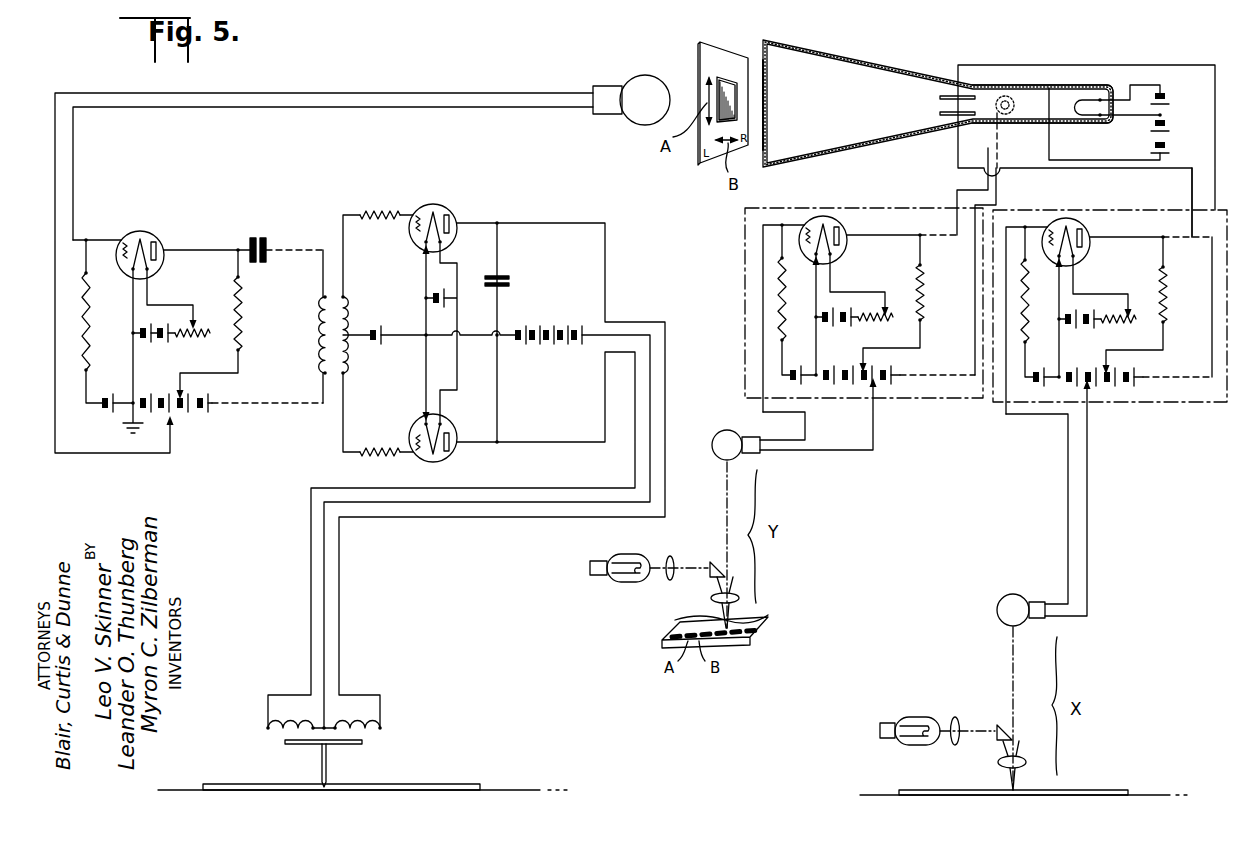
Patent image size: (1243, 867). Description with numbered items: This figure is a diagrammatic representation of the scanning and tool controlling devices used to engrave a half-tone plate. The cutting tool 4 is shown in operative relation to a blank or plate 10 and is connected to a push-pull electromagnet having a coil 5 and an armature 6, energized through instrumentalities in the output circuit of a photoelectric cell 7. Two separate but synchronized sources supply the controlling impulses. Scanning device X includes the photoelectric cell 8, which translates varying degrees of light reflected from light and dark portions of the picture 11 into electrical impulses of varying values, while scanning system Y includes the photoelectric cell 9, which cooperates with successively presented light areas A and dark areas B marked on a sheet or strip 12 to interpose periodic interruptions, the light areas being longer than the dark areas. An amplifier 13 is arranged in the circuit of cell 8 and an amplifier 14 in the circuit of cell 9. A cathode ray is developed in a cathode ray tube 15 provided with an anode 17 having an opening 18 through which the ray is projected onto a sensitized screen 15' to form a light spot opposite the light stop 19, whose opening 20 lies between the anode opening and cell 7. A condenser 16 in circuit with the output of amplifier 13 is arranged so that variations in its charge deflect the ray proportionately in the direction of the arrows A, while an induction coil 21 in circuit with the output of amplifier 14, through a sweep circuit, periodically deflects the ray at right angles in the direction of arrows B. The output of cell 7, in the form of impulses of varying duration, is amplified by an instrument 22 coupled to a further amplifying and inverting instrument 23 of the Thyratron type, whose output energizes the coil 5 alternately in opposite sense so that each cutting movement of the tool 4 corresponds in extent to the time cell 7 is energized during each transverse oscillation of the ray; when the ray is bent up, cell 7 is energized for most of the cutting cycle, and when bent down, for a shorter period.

The cutting tool 4 is at (320, 770).
The coil 5 is at (290, 724).
The armature 6 is at (345, 745).
The photoelectric cell 7 is at (638, 88).
The photoelectric cell 8 is at (1005, 606).
The photoelectric cell 9 is at (718, 437).
The plate 10 is at (420, 787).
The picture 11 is at (1091, 792).
The strip 12 is at (762, 620).
The amplifier 13 is at (1174, 403).
The amplifier 14 is at (930, 400).
The cathode ray tube 15 is at (938, 95).
The sensitized screen 15' is at (789, 105).
The condenser 16 is at (940, 116).
The anode 17 is at (1053, 92).
The opening 18 is at (1049, 108).
The light stop 19 is at (706, 56).
The opening 20 is at (727, 80).
The induction coil 21 is at (1001, 95).
The amplifier 22 is at (201, 240).
The amplifying and inverting instrument 23 is at (543, 218).